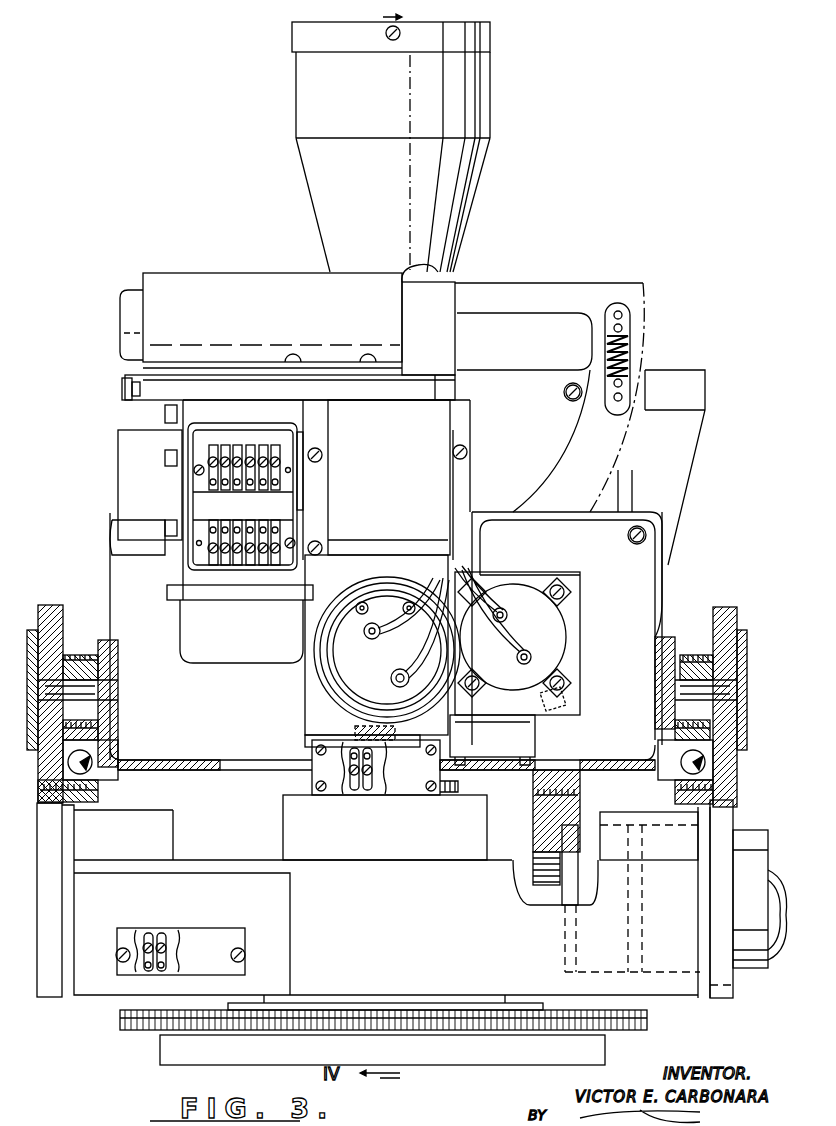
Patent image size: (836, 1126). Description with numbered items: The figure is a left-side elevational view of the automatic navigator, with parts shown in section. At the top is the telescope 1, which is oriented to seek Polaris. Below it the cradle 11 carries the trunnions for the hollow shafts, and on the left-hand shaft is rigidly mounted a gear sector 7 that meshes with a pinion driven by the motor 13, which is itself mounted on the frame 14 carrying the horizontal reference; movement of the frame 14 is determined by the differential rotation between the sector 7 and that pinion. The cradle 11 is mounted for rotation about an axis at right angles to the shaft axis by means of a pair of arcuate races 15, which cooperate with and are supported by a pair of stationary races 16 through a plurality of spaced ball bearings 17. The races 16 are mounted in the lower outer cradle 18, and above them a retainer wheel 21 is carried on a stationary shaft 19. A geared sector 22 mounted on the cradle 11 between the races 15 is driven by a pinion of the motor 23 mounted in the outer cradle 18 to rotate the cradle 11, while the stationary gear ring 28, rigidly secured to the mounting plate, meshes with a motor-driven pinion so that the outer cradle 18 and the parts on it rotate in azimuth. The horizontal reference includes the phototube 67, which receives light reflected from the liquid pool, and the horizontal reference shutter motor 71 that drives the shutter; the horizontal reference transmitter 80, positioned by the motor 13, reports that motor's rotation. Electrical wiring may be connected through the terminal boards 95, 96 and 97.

The telescope 1 is at (482, 152).
The gear sector 7 is at (650, 334).
The cradle 11 is at (655, 692).
The motor 13 is at (338, 675).
The frame 14 is at (575, 618).
The arcuate race 15 is at (715, 722).
The stationary race 16 is at (735, 772).
The ball bearing 17 is at (675, 776).
The outer cradle 18 is at (735, 783).
The stationary shaft 19 is at (735, 692).
The retainer wheel 21 is at (682, 658).
The geared sector 22 is at (533, 826).
The motor 23 is at (750, 848).
The stationary gear ring 28 is at (142, 1030).
The phototube 67 is at (258, 318).
The horizontal reference shutter motor 71 is at (398, 496).
The horizontal reference transmitter 80 is at (549, 636).
The terminal board 95 is at (254, 515).
The terminal board 96 is at (420, 782).
The terminal board 97 is at (222, 964).